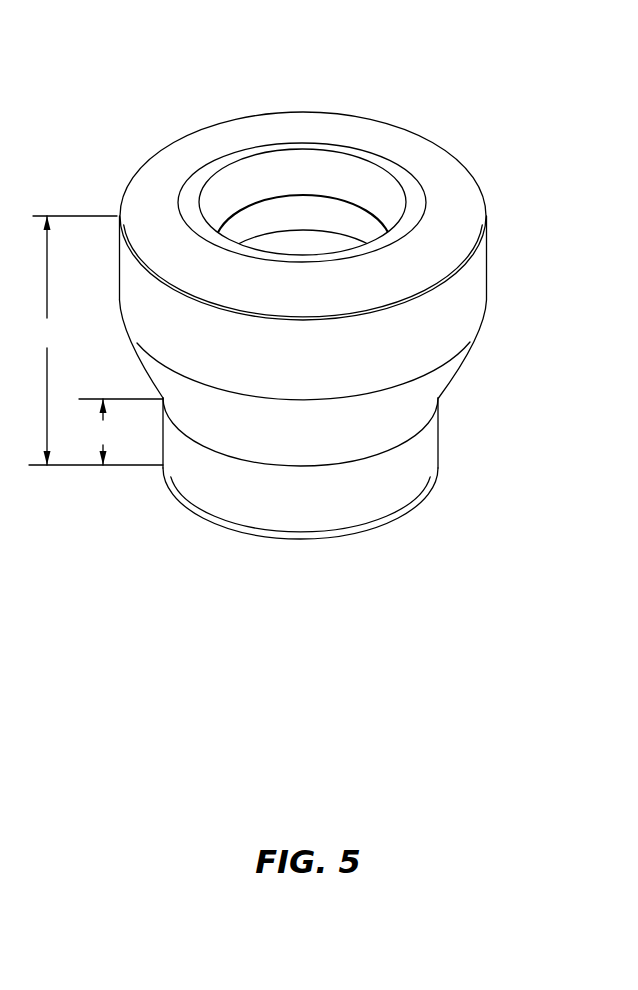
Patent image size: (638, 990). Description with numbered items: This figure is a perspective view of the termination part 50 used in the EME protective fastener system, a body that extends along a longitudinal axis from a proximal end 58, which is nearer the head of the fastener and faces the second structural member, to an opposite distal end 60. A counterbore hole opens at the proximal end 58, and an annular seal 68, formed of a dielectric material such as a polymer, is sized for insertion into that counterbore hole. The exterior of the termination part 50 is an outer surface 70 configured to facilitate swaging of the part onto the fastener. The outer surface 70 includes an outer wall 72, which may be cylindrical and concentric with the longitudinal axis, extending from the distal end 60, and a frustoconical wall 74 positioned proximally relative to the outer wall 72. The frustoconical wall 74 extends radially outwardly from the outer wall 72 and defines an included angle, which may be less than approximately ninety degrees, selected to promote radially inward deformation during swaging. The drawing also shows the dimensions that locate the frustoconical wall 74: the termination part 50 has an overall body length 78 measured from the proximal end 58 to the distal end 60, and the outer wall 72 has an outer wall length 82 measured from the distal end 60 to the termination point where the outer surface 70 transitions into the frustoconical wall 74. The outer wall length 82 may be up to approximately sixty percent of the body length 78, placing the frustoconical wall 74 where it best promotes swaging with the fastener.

The termination part 50 is at (171, 98).
The proximal end 58 is at (152, 212).
The seal 68 is at (414, 206).
The outer surface 70 is at (481, 339).
The frustoconical wall 74 is at (423, 403).
The outer wall 72 is at (423, 456).
The distal end 60 is at (205, 515).
The body length 78 is at (96, 340).
The outer wall length 82 is at (121, 432).